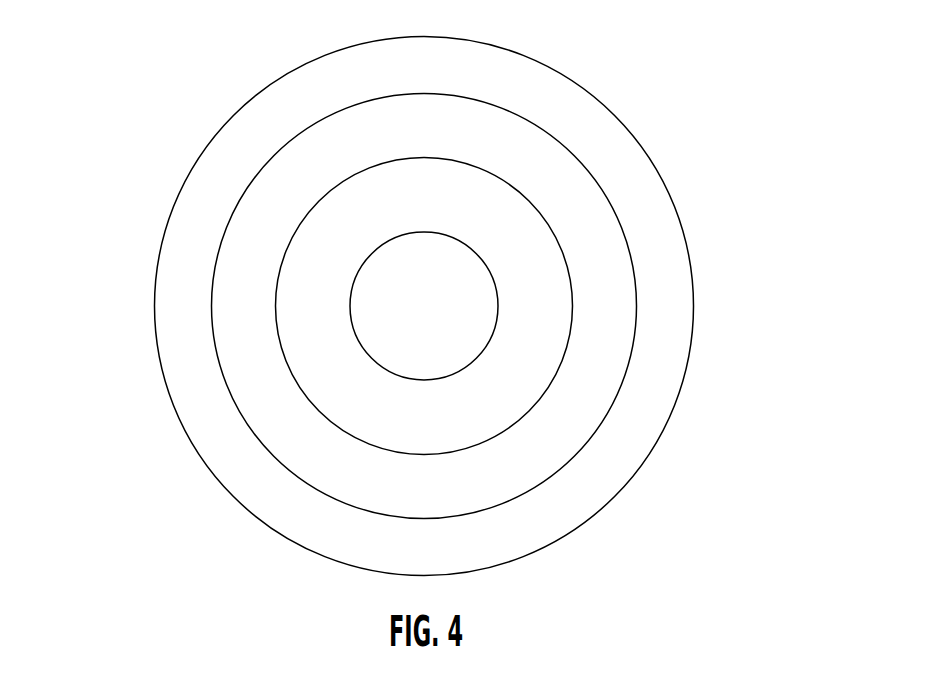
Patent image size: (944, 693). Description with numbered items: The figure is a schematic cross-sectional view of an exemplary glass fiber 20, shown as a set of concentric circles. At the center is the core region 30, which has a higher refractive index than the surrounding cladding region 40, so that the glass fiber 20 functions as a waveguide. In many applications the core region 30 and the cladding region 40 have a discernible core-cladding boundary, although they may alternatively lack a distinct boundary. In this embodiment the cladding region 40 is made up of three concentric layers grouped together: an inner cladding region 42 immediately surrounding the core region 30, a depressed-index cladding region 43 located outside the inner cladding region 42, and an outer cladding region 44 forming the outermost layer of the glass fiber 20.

The glass fiber 20 is at (155, 92).
The core region 30 is at (460, 273).
The cladding region 40 is at (787, 132).
The inner cladding region 42 is at (548, 268).
The depressed-index cladding region 43 is at (613, 282).
The outer cladding region 44 is at (667, 307).